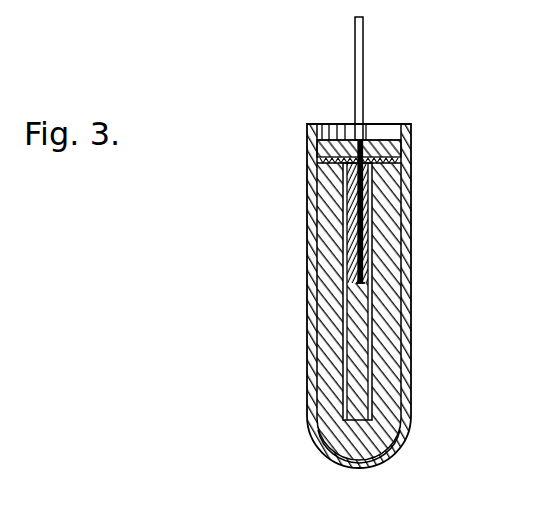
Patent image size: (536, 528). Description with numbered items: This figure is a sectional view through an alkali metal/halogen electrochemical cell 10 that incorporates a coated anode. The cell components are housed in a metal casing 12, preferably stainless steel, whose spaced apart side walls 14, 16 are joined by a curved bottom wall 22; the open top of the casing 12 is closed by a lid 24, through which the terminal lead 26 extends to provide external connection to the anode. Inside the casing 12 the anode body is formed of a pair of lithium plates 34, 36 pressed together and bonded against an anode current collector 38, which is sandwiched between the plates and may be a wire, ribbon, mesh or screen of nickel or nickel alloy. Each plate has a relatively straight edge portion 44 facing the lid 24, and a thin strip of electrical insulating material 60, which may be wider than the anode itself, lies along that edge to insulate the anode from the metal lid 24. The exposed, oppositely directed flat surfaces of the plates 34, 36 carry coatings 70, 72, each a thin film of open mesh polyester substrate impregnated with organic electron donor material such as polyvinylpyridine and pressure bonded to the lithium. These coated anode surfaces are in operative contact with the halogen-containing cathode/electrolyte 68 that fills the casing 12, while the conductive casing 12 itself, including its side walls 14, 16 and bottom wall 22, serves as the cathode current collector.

The alkali metal/halogen electrochemical cell 10 is at (452, 115).
The casing 12 is at (424, 302).
The side wall 14 is at (308, 313).
The side wall 16 is at (412, 328).
The curved bottom wall 22 is at (362, 470).
The lid 24 is at (342, 138).
The terminal lead 26 is at (355, 50).
The lithium plate 34 is at (358, 272).
The lithium plate 36 is at (372, 268).
The anode current collector 38 is at (364, 212).
The straight edge portion 44 is at (352, 165).
The insulating material strip 60 is at (392, 158).
The halogen-containing cathode/electrolyte 68 is at (330, 358).
The coating 70 is at (345, 232).
The coating 72 is at (372, 240).